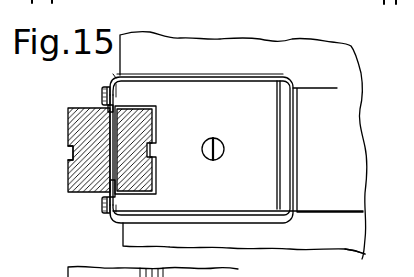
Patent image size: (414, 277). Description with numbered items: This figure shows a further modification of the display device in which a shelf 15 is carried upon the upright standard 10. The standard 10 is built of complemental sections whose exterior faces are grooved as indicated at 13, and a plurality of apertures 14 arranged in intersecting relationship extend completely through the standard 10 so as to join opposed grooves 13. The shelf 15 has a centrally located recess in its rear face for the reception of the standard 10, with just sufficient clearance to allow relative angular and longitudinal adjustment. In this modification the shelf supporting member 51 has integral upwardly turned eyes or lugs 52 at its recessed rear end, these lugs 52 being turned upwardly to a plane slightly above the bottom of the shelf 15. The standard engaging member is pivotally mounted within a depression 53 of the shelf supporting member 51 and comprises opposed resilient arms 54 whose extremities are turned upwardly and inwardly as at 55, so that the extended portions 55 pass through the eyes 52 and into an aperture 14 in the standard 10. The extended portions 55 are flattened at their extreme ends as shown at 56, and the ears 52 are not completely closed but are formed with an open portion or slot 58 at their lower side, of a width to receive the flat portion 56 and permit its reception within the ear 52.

The standard 10 is at (72, 183).
The groove 13 is at (69, 147).
The aperture 14 is at (113, 152).
The shelf 15 is at (351, 243).
The shelf supporting member 51 is at (338, 202).
The eye or lug 52 is at (104, 94).
The depression 53 is at (283, 153).
The resilient arm 54 is at (202, 78).
The extended portion 55 is at (113, 76).
The flat portion 56 is at (108, 118).
The slot 58 is at (116, 97).